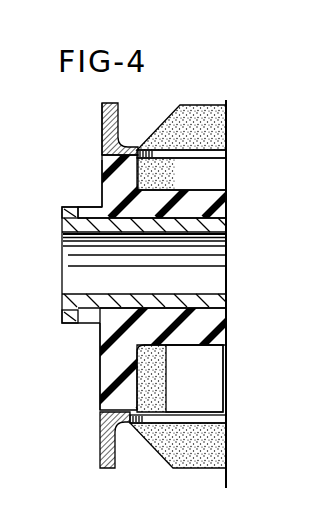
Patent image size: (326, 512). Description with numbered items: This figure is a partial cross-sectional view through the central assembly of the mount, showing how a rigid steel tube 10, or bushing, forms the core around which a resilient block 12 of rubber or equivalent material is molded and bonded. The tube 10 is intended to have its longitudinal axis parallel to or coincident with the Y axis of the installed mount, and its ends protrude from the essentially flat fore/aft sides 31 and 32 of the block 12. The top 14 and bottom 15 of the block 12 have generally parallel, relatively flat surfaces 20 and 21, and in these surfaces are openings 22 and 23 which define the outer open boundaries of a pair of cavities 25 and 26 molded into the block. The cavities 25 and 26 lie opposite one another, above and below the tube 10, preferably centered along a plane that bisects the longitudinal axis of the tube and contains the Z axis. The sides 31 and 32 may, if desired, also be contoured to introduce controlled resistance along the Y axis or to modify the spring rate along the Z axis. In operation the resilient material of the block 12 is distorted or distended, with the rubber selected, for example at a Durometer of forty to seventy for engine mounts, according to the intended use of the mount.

The tube 10 is at (62, 212).
The block 12 is at (226, 208).
The top 14 is at (117, 192).
The bottom 15 is at (118, 399).
The surface 20 is at (100, 163).
The surface 21 is at (106, 416).
The opening 22 is at (150, 172).
The opening 23 is at (145, 388).
The cavity 25 is at (213, 177).
The cavity 26 is at (217, 366).
The side 31 is at (98, 348).
The side 32 is at (102, 175).